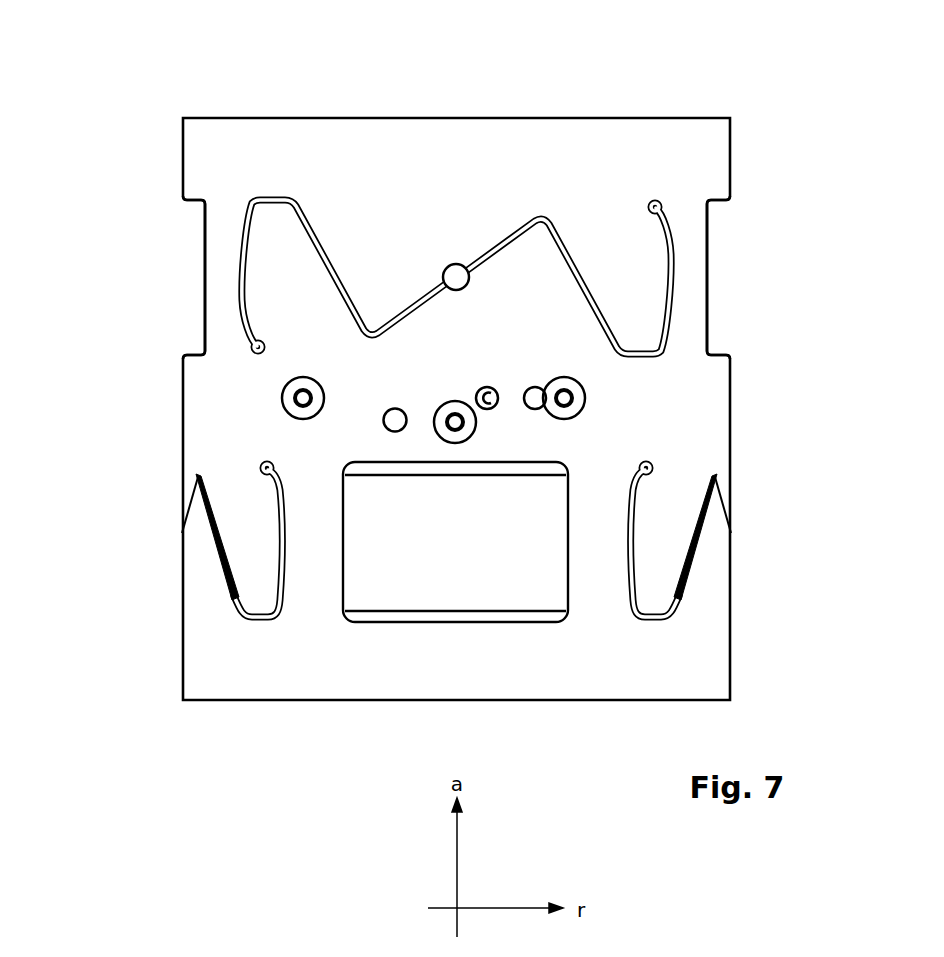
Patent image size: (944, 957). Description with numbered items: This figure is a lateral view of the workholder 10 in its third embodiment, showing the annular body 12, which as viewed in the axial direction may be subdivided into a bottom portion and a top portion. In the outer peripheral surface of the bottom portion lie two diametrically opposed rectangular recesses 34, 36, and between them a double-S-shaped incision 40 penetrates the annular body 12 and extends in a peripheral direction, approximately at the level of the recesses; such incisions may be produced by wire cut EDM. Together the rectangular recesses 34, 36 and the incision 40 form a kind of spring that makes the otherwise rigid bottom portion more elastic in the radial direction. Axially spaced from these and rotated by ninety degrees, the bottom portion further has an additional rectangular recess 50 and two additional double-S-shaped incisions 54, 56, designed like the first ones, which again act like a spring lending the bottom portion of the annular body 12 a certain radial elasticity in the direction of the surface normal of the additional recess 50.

The workholder 10 is at (171, 56).
The annular body 12 is at (290, 150).
The rectangular recess 34 is at (724, 300).
The rectangular recess 36 is at (174, 274).
The double-S-shaped incision 40 is at (578, 246).
The additional rectangular recess 50 is at (400, 558).
The additional double-S-shaped incision 54 is at (224, 566).
The additional double-S-shaped incision 56 is at (685, 587).